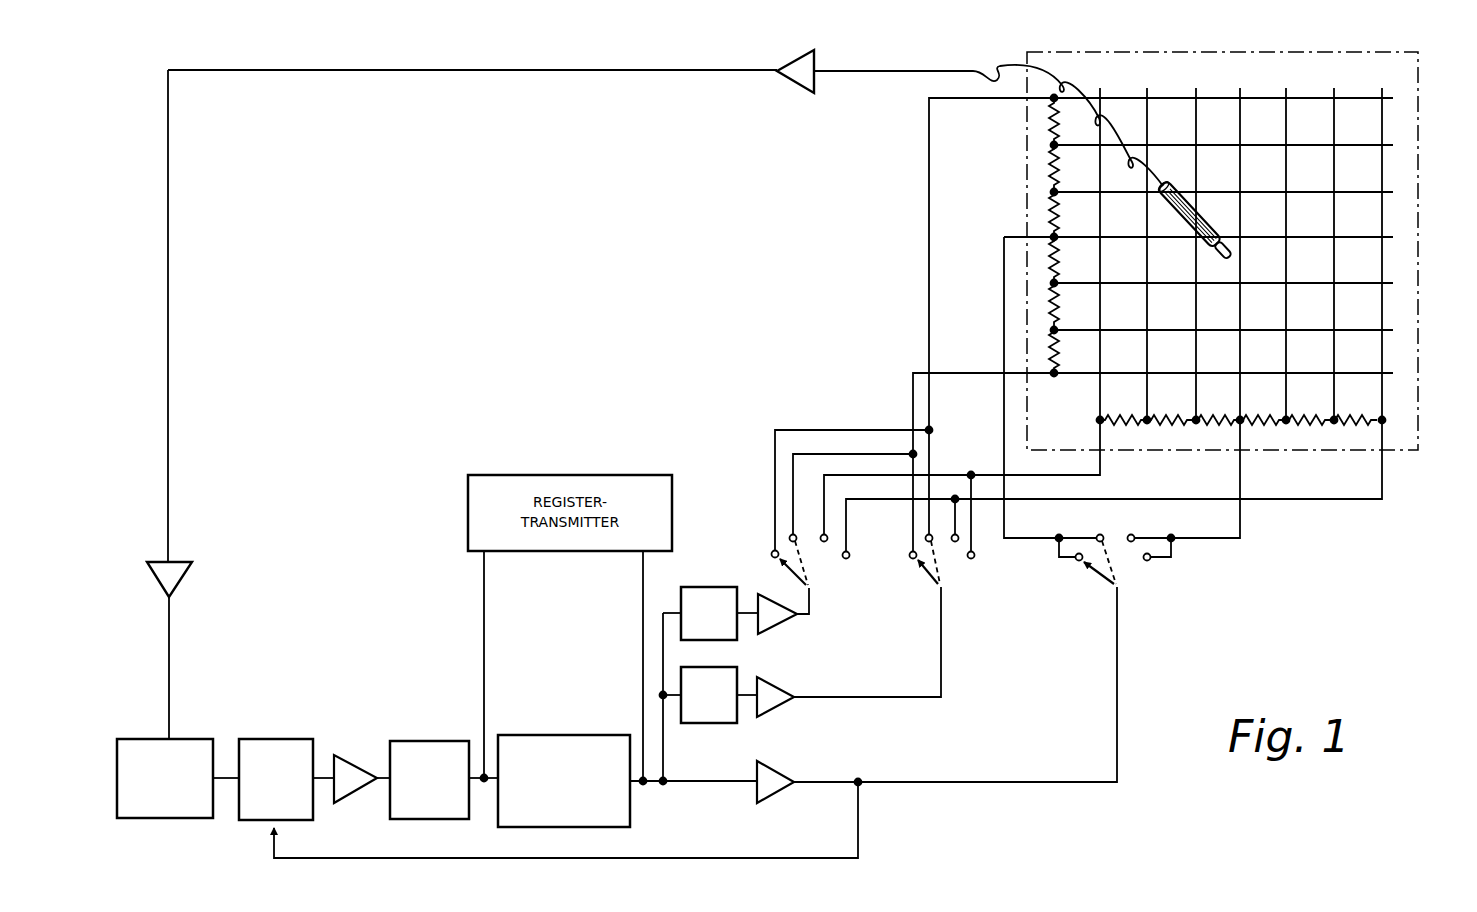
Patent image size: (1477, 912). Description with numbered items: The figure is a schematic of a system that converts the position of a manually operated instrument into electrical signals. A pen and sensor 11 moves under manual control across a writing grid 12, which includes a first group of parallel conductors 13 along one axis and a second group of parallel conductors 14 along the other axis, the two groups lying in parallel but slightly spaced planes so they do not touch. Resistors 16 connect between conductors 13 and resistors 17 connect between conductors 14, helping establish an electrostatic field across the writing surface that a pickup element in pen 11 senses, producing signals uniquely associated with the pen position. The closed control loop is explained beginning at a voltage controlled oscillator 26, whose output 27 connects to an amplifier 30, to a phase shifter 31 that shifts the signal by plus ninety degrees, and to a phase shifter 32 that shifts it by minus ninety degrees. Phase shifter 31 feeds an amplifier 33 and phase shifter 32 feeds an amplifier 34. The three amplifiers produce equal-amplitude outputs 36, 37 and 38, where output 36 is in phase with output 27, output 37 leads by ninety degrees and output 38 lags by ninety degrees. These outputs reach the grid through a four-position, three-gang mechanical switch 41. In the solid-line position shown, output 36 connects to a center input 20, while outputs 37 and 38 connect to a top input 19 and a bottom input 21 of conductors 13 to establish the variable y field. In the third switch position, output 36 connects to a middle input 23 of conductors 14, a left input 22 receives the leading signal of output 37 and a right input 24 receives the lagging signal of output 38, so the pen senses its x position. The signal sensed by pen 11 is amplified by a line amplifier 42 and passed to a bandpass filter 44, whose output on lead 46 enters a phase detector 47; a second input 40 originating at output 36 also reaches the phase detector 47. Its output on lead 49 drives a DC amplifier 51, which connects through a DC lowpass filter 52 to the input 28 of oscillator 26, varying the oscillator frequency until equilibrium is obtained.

The pen and sensor 11 is at (1218, 230).
The writing grid 12 is at (1418, 218).
The first group of parallel conductors 13 is at (1393, 98).
The second group of parallel conductors 14 is at (1147, 88).
The resistors 16 is at (1050, 122).
The resistors 17 is at (1130, 424).
The top input 19 is at (929, 133).
The center input 20 is at (1004, 241).
The bottom input 21 is at (958, 373).
The left input 22 is at (1033, 478).
The middle input 23 is at (1240, 530).
The right input 24 is at (1382, 492).
The voltage controlled oscillator 26 is at (575, 827).
The output 27 is at (637, 785).
The input 28 is at (483, 788).
The amplifier 30 is at (780, 795).
The phase shifter 31 is at (720, 587).
The phase shifter 32 is at (737, 670).
The amplifier 33 is at (785, 624).
The amplifier 34 is at (783, 708).
The output 36 is at (828, 782).
The output 37 is at (812, 607).
The output 38 is at (890, 697).
The second input 40 is at (276, 848).
The switch 41 is at (884, 549).
The line amplifier 42 is at (816, 60).
The bandpass filter 44 is at (176, 820).
The lead 46 is at (228, 779).
The phase detector 47 is at (280, 739).
The lead 49 is at (326, 770).
The DC amplifier 51 is at (355, 762).
The DC lowpass filter 52 is at (430, 741).